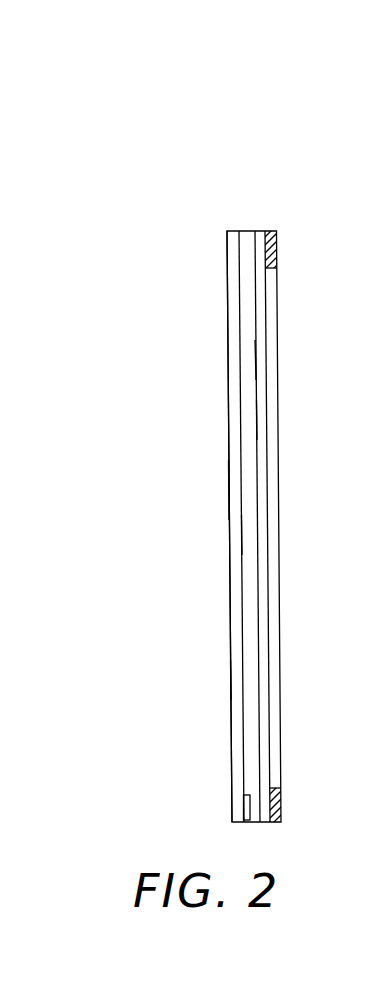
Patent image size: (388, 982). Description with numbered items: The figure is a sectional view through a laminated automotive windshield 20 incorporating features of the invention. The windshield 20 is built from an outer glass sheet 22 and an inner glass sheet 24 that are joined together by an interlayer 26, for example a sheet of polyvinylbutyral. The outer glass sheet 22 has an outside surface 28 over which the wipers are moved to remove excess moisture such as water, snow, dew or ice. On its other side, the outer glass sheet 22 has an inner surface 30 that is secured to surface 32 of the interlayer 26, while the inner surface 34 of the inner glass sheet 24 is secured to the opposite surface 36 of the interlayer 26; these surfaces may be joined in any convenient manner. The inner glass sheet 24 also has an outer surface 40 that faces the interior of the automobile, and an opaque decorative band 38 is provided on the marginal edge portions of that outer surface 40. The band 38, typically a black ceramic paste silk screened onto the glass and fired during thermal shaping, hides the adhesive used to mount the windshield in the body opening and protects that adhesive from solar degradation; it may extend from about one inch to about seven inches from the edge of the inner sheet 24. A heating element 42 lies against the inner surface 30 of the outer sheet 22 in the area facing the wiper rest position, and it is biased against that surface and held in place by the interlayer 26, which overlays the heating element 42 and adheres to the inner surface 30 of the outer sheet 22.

The windshield 20 is at (238, 148).
The outer glass sheet 22 is at (227, 225).
The inner glass sheet 24 is at (262, 225).
The interlayer 26 is at (243, 225).
The outside surface 28 is at (227, 488).
The inner surface 30 is at (243, 666).
The surface 32 is at (244, 547).
The inner surface 34 is at (256, 430).
The surface 36 is at (253, 368).
The opaque decorative band 38 is at (277, 252).
The outer surface 40 is at (267, 317).
The heating element 42 is at (239, 810).